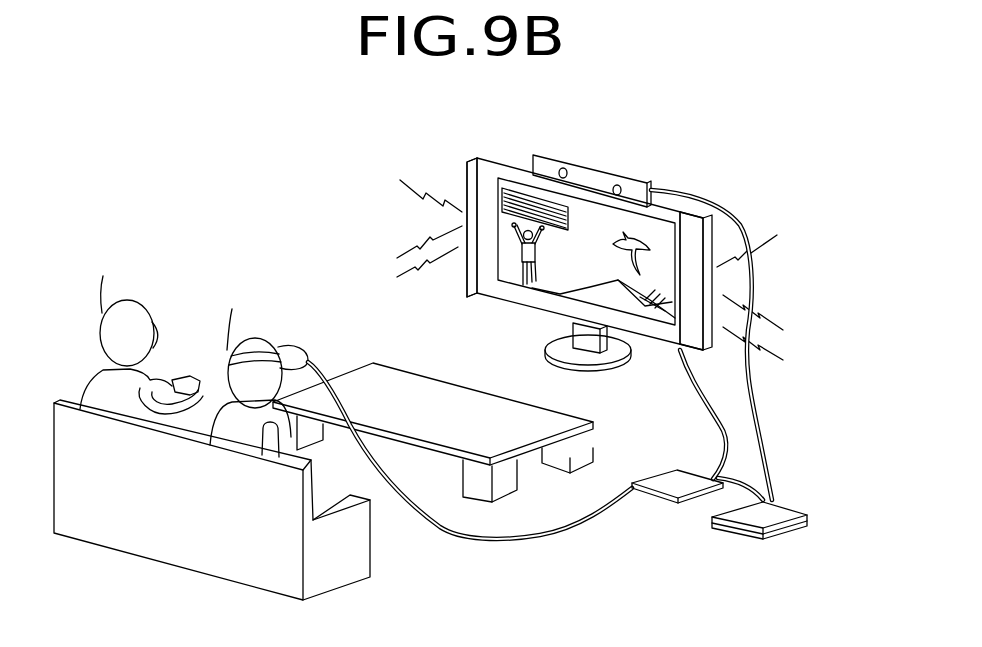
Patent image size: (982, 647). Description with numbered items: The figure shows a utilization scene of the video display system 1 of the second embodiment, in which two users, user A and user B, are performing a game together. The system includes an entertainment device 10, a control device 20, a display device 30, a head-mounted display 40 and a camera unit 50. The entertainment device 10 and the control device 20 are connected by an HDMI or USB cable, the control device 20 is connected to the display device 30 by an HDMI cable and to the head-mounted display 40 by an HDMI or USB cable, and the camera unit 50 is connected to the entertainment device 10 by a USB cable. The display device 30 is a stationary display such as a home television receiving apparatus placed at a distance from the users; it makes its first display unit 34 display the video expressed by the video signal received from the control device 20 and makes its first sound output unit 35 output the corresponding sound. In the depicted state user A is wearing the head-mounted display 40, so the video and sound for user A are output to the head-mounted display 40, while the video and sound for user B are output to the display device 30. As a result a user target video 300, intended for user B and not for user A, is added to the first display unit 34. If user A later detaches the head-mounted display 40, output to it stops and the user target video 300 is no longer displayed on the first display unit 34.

The video display system 1 is at (183, 176).
The entertainment device 10 is at (786, 507).
The control device 20 is at (663, 503).
The display device 30 is at (522, 302).
The first display unit 34 is at (505, 172).
The first sound output unit 35 is at (482, 296).
The head-mounted display 40 is at (297, 352).
The camera unit 50 is at (621, 176).
The user target video 300 is at (521, 185).